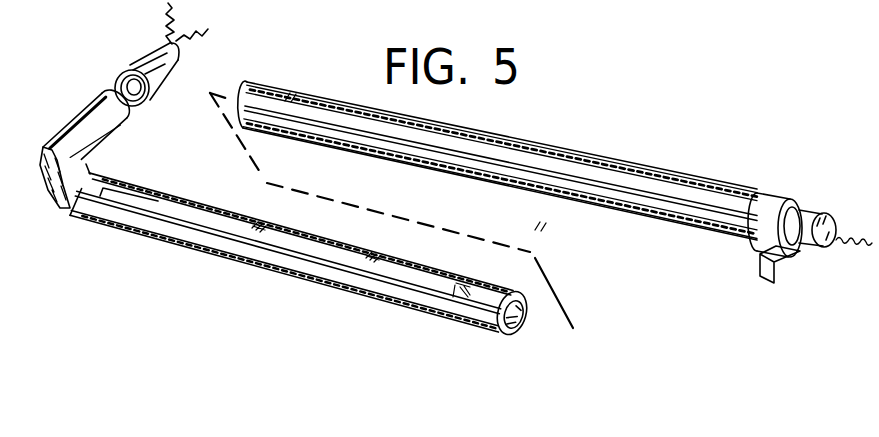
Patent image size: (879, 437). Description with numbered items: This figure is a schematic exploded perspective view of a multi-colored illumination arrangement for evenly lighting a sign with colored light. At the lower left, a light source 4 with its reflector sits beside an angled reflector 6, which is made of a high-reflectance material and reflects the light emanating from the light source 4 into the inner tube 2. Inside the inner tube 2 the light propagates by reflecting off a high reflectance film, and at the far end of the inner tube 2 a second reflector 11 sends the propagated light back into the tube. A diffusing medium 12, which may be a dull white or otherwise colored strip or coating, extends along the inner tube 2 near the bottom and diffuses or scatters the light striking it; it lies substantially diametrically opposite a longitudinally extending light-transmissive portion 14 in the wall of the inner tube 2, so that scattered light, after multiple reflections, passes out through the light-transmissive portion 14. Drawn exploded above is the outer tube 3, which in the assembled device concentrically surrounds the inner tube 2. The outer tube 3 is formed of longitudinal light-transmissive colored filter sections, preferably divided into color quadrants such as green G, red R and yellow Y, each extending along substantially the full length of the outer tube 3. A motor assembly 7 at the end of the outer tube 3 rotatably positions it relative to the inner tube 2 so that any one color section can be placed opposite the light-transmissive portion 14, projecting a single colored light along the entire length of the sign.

The inner tube 2 is at (335, 274).
The outer tube 3 is at (531, 165).
The light source 4 is at (129, 64).
The reflector 6 is at (63, 206).
The motor assembly 7 is at (812, 217).
The reflector 11 is at (528, 301).
The diffusing medium 12 is at (527, 318).
The light-transmissive portion 14 is at (230, 237).
The red color quadrant R is at (597, 158).
The green color quadrant G is at (598, 210).
The yellow color quadrant Y is at (687, 200).